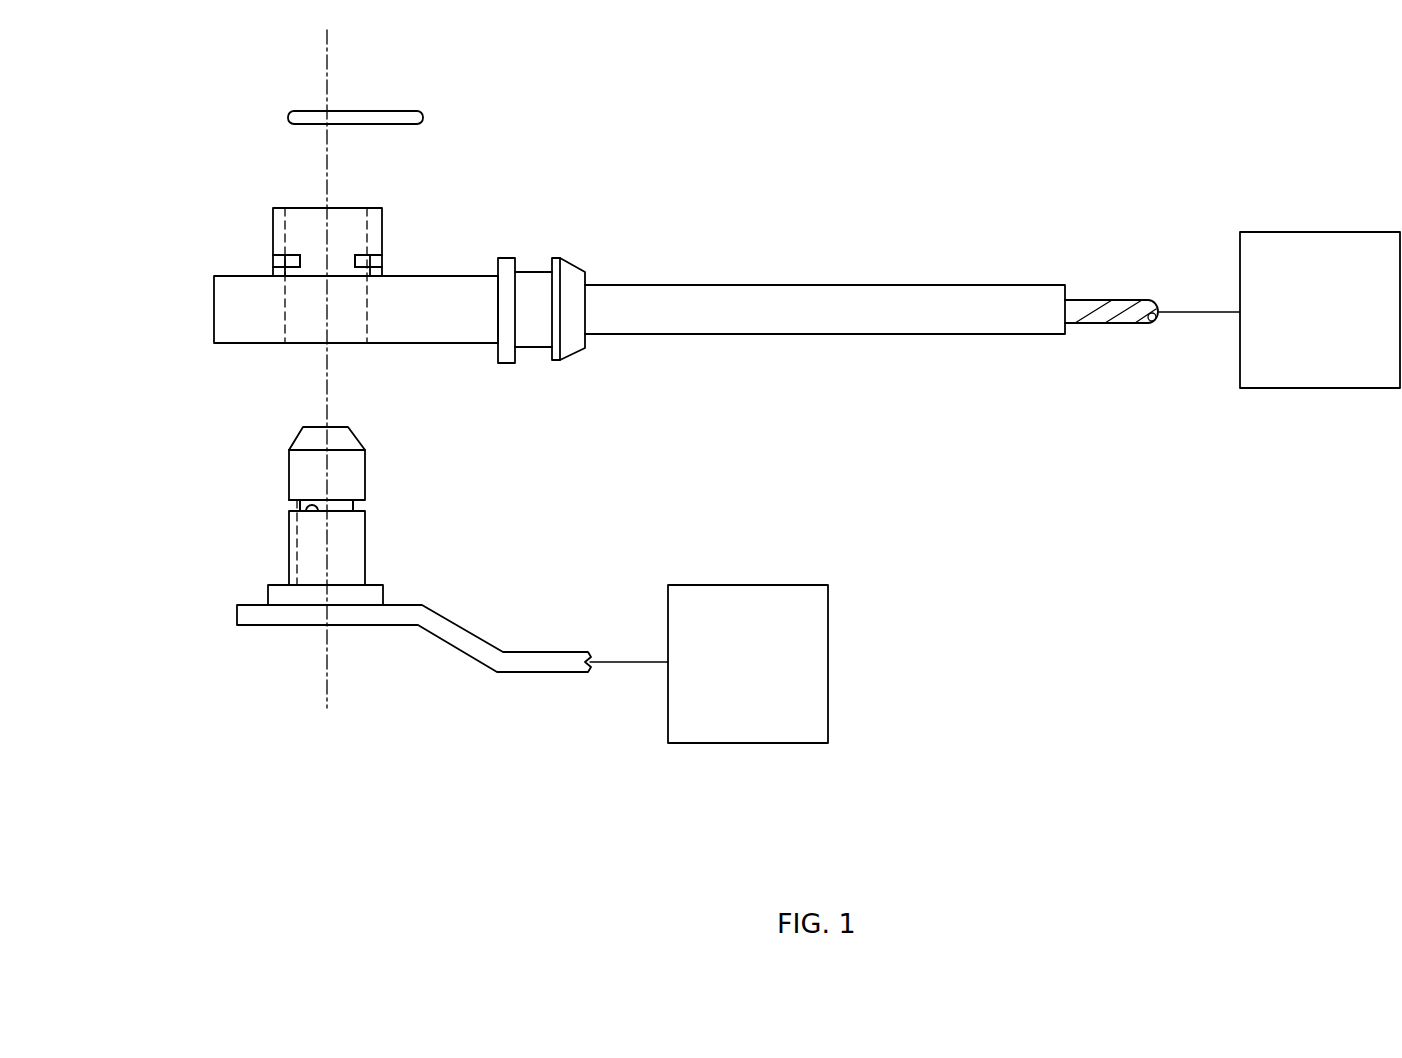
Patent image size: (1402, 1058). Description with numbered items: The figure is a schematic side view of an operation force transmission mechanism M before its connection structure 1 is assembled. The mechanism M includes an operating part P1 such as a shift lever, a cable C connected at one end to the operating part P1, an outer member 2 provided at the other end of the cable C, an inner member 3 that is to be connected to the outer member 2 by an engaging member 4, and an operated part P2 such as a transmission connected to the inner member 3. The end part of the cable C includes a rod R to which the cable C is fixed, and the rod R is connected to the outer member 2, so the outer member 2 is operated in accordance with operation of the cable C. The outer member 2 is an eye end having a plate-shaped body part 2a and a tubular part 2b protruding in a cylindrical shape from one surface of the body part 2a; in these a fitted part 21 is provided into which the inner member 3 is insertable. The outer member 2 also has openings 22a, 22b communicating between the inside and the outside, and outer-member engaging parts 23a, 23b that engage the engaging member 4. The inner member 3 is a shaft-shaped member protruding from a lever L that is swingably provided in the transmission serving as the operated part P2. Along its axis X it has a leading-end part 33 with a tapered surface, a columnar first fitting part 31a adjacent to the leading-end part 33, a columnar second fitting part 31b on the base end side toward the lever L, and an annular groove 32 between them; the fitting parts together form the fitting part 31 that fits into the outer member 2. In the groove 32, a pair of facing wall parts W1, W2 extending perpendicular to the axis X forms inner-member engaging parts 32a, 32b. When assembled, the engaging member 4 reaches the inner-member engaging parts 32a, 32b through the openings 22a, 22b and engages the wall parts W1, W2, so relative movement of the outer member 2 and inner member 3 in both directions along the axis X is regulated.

The connection structure 1 is at (200, 152).
The outer member 2 is at (257, 228).
The body part 2a is at (460, 293).
The tubular part 2b is at (344, 218).
The inner member 3 is at (375, 457).
The engaging member 4 is at (393, 104).
The fitted part 21 is at (297, 303).
The opening 22a is at (267, 262).
The opening 22b is at (383, 262).
The outer-member engaging part 23a is at (277, 210).
The outer-member engaging part 23b is at (365, 262).
The fitting part 31 is at (497, 517).
The first fitting part 31a is at (343, 472).
The second fitting part 31b is at (343, 563).
The annular groove 32 is at (316, 577).
The inner-member engaging part 32a is at (278, 507).
The inner-member engaging part 32b is at (368, 505).
The leading-end part 33 is at (313, 440).
The wall part W1 is at (288, 503).
The wall part W2 is at (287, 510).
The axis X is at (325, 677).
The lever L is at (527, 663).
The rod R is at (872, 308).
The cable C is at (1117, 313).
The operation force transmission mechanism M is at (1118, 103).
The operating part P1 is at (1317, 248).
The operated part P2 is at (780, 730).